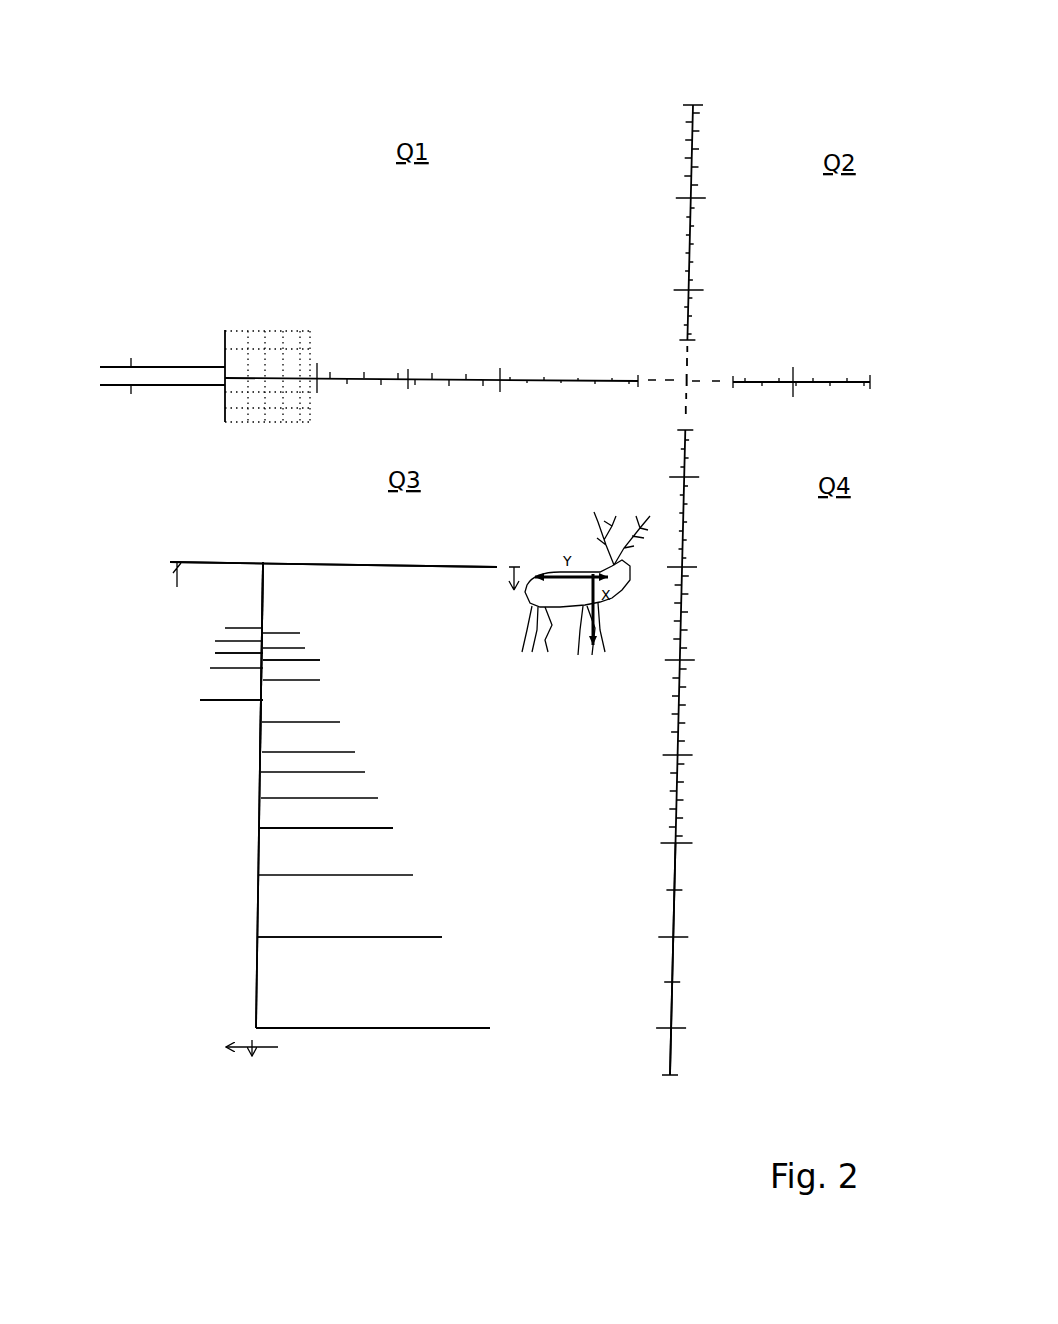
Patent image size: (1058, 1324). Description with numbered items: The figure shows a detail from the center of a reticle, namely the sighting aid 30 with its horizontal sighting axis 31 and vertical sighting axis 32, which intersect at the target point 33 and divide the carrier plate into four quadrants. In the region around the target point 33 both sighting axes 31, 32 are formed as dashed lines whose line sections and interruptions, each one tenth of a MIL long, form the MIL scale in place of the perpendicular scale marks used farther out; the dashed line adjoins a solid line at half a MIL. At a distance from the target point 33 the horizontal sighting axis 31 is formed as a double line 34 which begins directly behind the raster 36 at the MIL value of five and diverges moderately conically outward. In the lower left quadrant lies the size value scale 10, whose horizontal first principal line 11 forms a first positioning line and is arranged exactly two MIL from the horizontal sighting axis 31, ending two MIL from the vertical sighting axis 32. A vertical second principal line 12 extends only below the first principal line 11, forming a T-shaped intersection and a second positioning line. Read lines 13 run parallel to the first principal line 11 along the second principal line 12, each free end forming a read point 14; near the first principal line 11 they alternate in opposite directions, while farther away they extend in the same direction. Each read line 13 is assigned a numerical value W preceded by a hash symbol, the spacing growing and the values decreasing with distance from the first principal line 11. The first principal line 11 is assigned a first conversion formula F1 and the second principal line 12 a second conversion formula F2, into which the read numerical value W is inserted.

The size value scale 10 is at (215, 850).
The first principal line 11 is at (192, 560).
The second principal line 12 is at (261, 608).
The read lines 13 is at (223, 703).
The read point 14 is at (195, 700).
The sighting aid 30 is at (708, 104).
The horizontal sighting axis 31 is at (430, 376).
The vertical sighting axis 32 is at (677, 857).
The target point 33 is at (690, 382).
The double line 34 is at (121, 372).
The raster 36 is at (227, 331).
The numerical value W is at (180, 663).
The first conversion formula F1 is at (212, 526).
The second conversion formula F2 is at (215, 955).